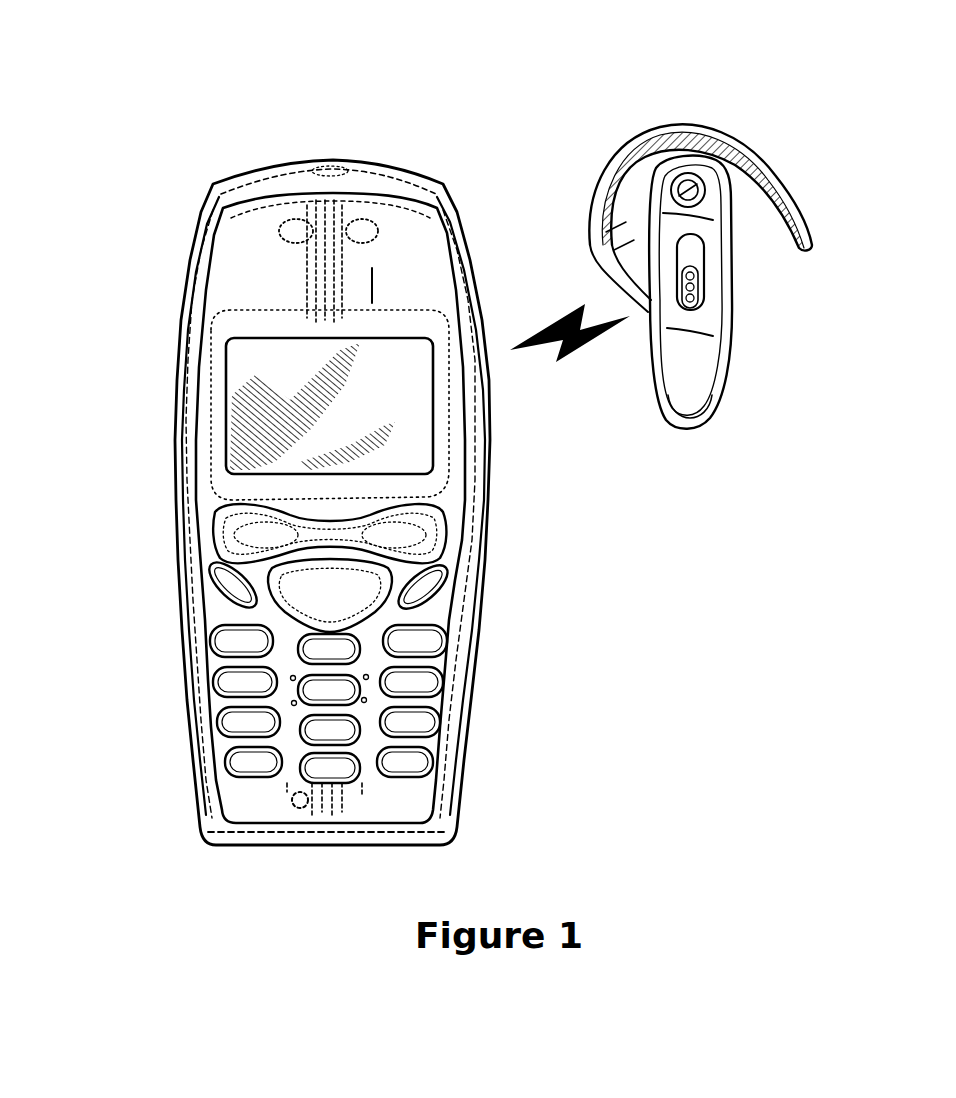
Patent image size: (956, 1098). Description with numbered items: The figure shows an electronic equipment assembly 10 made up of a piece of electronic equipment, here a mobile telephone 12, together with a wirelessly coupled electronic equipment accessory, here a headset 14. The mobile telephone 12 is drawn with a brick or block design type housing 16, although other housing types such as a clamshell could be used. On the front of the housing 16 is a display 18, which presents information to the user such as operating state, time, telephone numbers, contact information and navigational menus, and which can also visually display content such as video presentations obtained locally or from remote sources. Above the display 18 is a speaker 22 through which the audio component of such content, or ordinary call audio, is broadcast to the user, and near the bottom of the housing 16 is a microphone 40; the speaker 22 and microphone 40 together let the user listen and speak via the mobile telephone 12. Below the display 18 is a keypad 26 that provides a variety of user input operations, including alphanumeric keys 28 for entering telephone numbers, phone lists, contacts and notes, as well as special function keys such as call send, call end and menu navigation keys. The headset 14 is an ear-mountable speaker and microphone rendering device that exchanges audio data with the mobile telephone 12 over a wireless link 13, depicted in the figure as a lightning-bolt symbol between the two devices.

The electronic equipment assembly 10 is at (232, 70).
The mobile telephone 12 is at (214, 184).
The wireless link 13 is at (568, 312).
The headset 14 is at (637, 137).
The housing 16 is at (190, 268).
The display 18 is at (240, 365).
The speaker 22 is at (300, 232).
The keypad 26 is at (206, 710).
The alphanumeric keys 28 is at (237, 637).
The microphone 40 is at (303, 808).